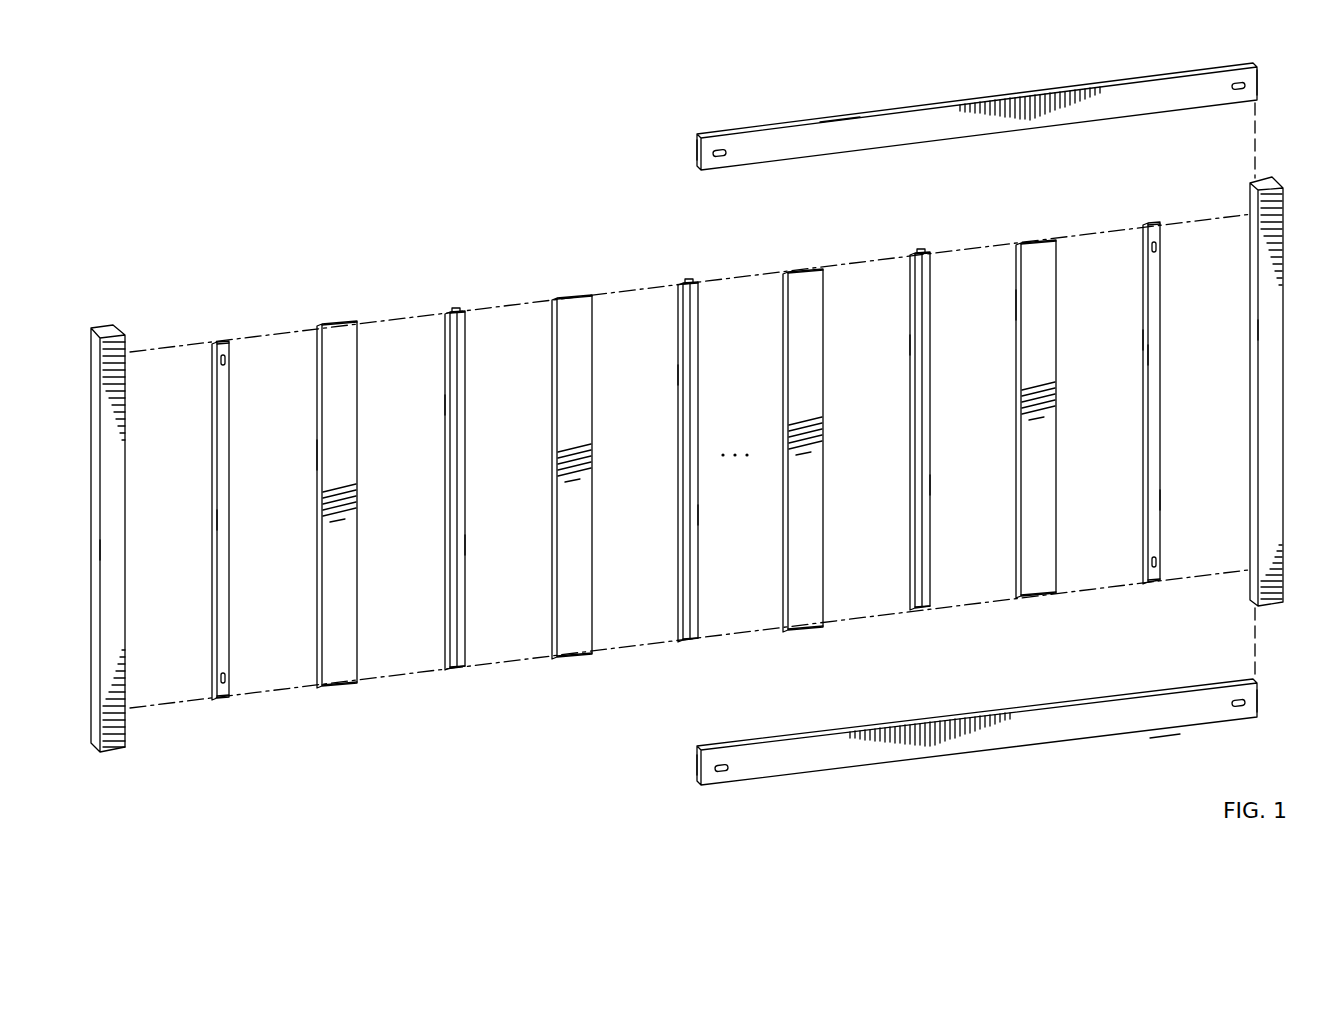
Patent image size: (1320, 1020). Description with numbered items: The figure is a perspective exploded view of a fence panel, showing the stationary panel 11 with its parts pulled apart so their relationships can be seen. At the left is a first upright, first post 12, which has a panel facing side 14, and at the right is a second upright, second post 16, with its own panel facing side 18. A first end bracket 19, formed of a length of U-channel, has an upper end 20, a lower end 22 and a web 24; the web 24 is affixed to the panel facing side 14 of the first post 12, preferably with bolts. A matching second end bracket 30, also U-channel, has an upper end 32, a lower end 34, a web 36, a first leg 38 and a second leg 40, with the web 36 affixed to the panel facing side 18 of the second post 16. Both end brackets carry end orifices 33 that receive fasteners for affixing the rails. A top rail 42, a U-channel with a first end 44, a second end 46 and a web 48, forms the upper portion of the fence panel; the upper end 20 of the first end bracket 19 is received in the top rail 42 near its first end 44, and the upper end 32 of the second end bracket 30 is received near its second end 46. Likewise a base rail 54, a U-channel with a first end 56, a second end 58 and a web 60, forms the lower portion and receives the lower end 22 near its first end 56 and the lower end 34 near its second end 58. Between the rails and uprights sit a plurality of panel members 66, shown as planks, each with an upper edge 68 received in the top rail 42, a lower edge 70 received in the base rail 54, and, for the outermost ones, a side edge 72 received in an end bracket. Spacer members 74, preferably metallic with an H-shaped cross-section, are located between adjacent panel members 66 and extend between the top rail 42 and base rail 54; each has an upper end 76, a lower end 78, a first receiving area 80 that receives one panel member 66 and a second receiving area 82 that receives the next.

The stationary panel 11 is at (457, 206).
The first post 12 is at (128, 456).
The panel facing side 14 is at (127, 548).
The second post 16 is at (1250, 452).
The panel facing side 18 is at (1257, 330).
The first end bracket 19 is at (232, 556).
The upper end 20 is at (231, 350).
The lower end 22 is at (216, 688).
The web 24 is at (216, 520).
The second end bracket 30 is at (1163, 405).
The upper end 32 is at (1163, 232).
The end orifices 33 is at (221, 360).
The lower end 34 is at (1143, 566).
The web 36 is at (1163, 495).
The first leg 38 is at (1143, 340).
The second leg 40 is at (1158, 355).
The top rail 42 is at (975, 99).
The first end 44 is at (697, 150).
The second end 46 is at (1262, 78).
The web 48 is at (840, 113).
The base rail 54 is at (984, 764).
The first end 56 is at (697, 765).
The second end 58 is at (1262, 700).
The web 60 is at (1158, 735).
The panel members 66 is at (359, 471).
The upper edge 68 is at (330, 322).
The lower edge 70 is at (340, 688).
The side edge 72 is at (318, 461).
The spacer members 74 is at (467, 490).
The upper end 76 is at (466, 322).
The lower end 78 is at (445, 660).
The first receiving area 80 is at (445, 405).
The second receiving area 82 is at (466, 545).